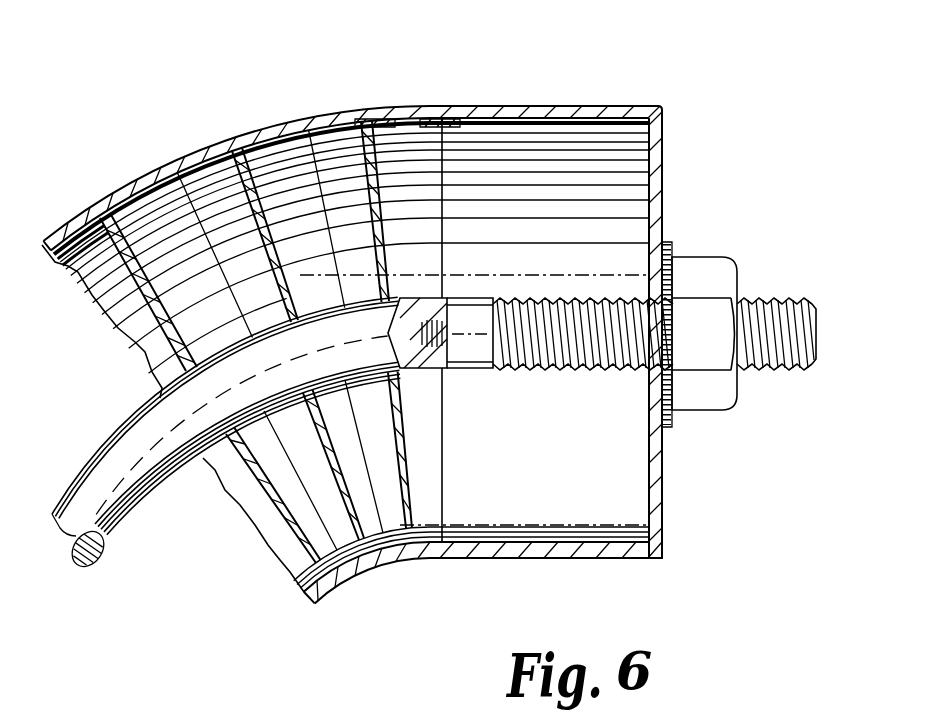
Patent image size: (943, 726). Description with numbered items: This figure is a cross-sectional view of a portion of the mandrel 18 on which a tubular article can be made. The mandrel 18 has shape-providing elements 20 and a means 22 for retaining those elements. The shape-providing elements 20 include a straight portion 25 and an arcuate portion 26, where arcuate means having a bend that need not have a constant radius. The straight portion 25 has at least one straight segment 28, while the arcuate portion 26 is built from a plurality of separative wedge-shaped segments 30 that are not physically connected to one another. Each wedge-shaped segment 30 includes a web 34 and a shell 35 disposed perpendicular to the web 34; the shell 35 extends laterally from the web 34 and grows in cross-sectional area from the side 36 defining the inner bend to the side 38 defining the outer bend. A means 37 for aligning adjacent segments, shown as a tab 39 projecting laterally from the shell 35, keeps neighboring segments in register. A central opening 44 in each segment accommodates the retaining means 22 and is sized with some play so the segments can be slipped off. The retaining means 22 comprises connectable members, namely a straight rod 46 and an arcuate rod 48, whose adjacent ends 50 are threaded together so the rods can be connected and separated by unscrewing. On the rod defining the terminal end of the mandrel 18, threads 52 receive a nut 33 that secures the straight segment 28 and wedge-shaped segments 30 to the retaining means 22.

The mandrel 18 is at (623, 53).
The shape-providing elements 20 is at (420, 103).
The means for retaining the shape-providing elements 22 is at (697, 240).
The straight portion 25 is at (663, 153).
The arcuate portion 26 is at (75, 215).
The straight segment 28 is at (513, 552).
The wedge-shaped segments 30 is at (320, 113).
The nut 33 is at (715, 397).
The web 34 is at (400, 569).
The shell 35 is at (180, 167).
The side 36 is at (355, 582).
The means for aligning adjacent segments 37 is at (320, 560).
The side 38 is at (217, 147).
The tab 39 is at (143, 182).
The central opening 44 is at (160, 397).
The straight rod 46 is at (573, 371).
The arcuate rod 48 is at (140, 480).
The adjacent ends 50 is at (477, 350).
The threads 52 is at (787, 287).